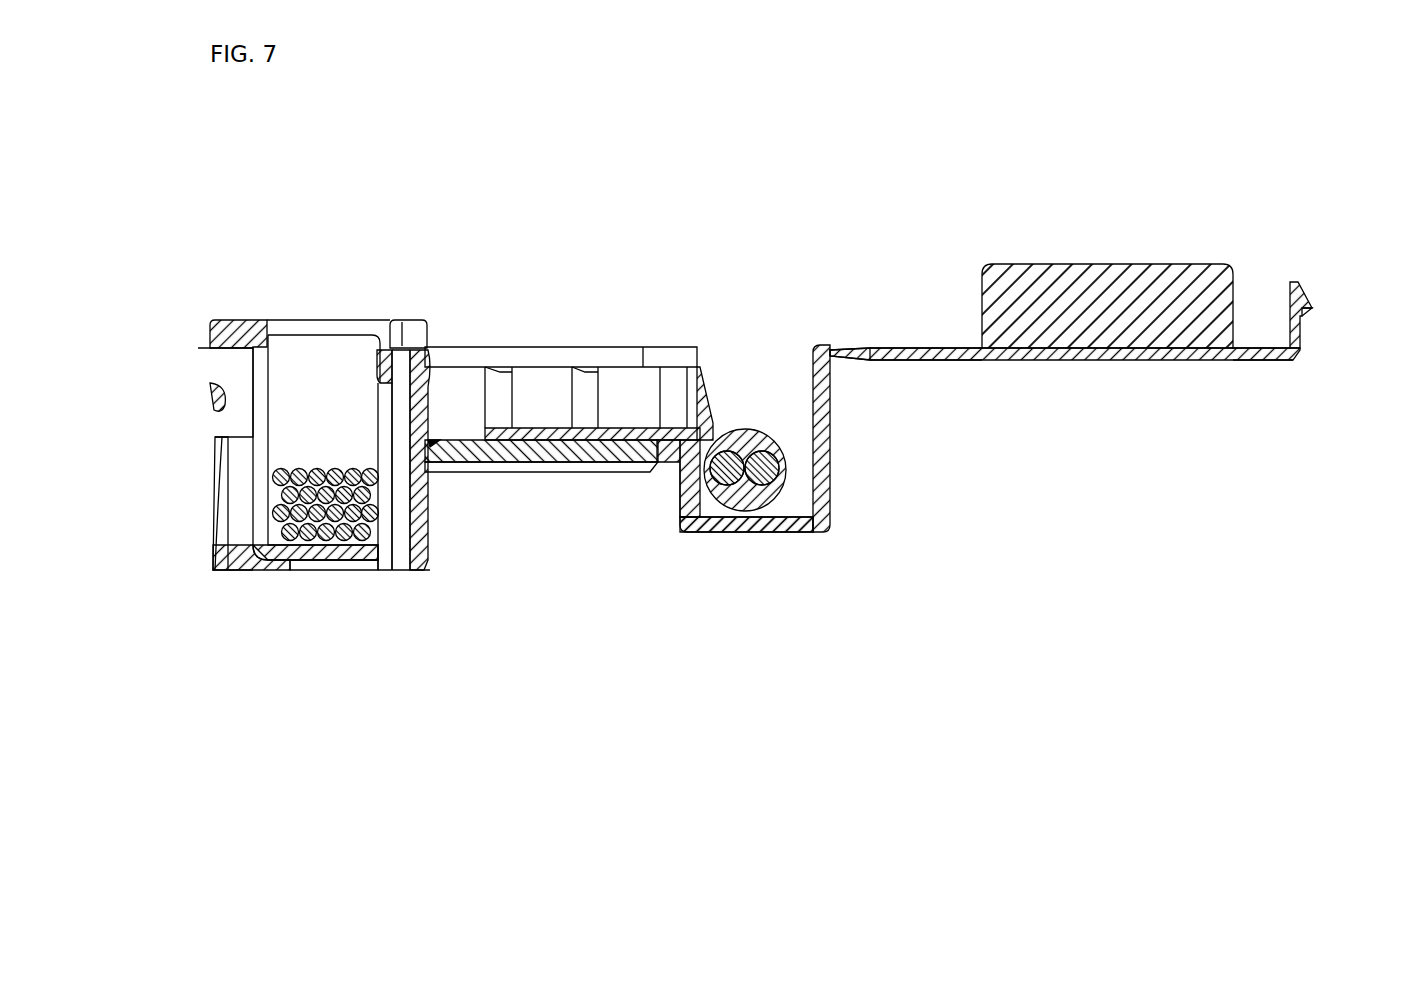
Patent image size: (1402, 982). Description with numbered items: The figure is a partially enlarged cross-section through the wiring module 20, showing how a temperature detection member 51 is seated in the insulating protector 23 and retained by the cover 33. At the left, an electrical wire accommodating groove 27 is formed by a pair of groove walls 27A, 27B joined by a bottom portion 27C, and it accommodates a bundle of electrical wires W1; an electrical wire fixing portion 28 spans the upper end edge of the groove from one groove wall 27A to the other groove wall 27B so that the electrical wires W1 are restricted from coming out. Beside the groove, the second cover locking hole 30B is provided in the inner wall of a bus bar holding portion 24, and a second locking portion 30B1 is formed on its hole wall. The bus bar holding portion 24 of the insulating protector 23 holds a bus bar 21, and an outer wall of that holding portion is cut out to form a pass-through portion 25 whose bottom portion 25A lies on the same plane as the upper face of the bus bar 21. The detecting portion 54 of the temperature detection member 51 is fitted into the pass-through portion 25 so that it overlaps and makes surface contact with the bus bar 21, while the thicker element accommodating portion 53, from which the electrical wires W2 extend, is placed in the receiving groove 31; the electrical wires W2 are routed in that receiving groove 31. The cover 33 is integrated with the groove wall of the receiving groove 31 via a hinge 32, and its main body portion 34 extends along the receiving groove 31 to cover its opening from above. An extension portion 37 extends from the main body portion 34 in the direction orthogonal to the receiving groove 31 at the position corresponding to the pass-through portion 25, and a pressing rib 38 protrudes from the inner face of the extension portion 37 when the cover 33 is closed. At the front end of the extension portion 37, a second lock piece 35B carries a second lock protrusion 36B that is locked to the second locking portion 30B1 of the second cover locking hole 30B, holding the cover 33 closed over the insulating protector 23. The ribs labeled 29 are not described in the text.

The wiring module 20 is at (950, 142).
The bus bar 21 is at (542, 437).
The insulating protector 23 is at (600, 480).
The bus bar holding portion 24 is at (655, 372).
The pass-through portion 25 is at (668, 398).
The bottom portion of pass-through portion 25A is at (683, 437).
The electrical wire accommodating groove 27 is at (333, 362).
The groove wall 27A is at (400, 345).
The groove wall 27B is at (276, 362).
The bottom portion 27C is at (305, 548).
The electrical wire fixing portion 28 is at (317, 323).
The ribs 29 is at (443, 428).
The second cover locking hole 30B is at (420, 335).
The second locking portion 30B1 is at (374, 383).
The receiving groove 31 is at (798, 503).
The hinge 32 is at (832, 352).
The cover 33 is at (1023, 362).
The main body portion 34 is at (915, 362).
The second lock piece 35B is at (1305, 321).
The second lock protrusion 36B is at (1313, 300).
The extension portion 37 is at (1258, 362).
The pressing rib 38 is at (1108, 262).
The temperature detection member 51 is at (778, 509).
The element accommodating portion 53 is at (765, 503).
The detecting portion 54 is at (520, 445).
The electrical wire W1 is at (345, 495).
The electrical wire W2 is at (762, 490).